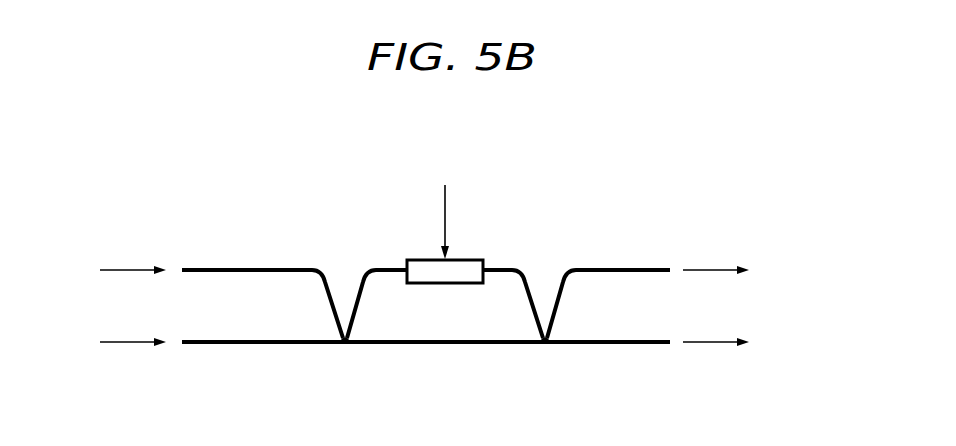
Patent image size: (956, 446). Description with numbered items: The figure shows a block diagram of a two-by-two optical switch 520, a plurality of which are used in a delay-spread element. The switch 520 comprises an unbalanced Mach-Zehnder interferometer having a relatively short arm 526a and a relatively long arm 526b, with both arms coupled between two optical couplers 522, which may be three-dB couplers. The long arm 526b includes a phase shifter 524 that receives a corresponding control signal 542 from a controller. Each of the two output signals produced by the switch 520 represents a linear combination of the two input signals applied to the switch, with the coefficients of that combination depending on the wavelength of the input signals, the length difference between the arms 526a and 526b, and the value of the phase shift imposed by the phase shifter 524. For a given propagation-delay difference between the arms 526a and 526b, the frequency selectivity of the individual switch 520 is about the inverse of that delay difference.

The 2×2 optical switch 520 is at (464, 123).
The optical coupler 522 is at (345, 345).
The phase shifter 524 is at (467, 284).
The short arm 526a is at (441, 345).
The long arm 526b is at (372, 268).
The control signal 542 is at (447, 215).